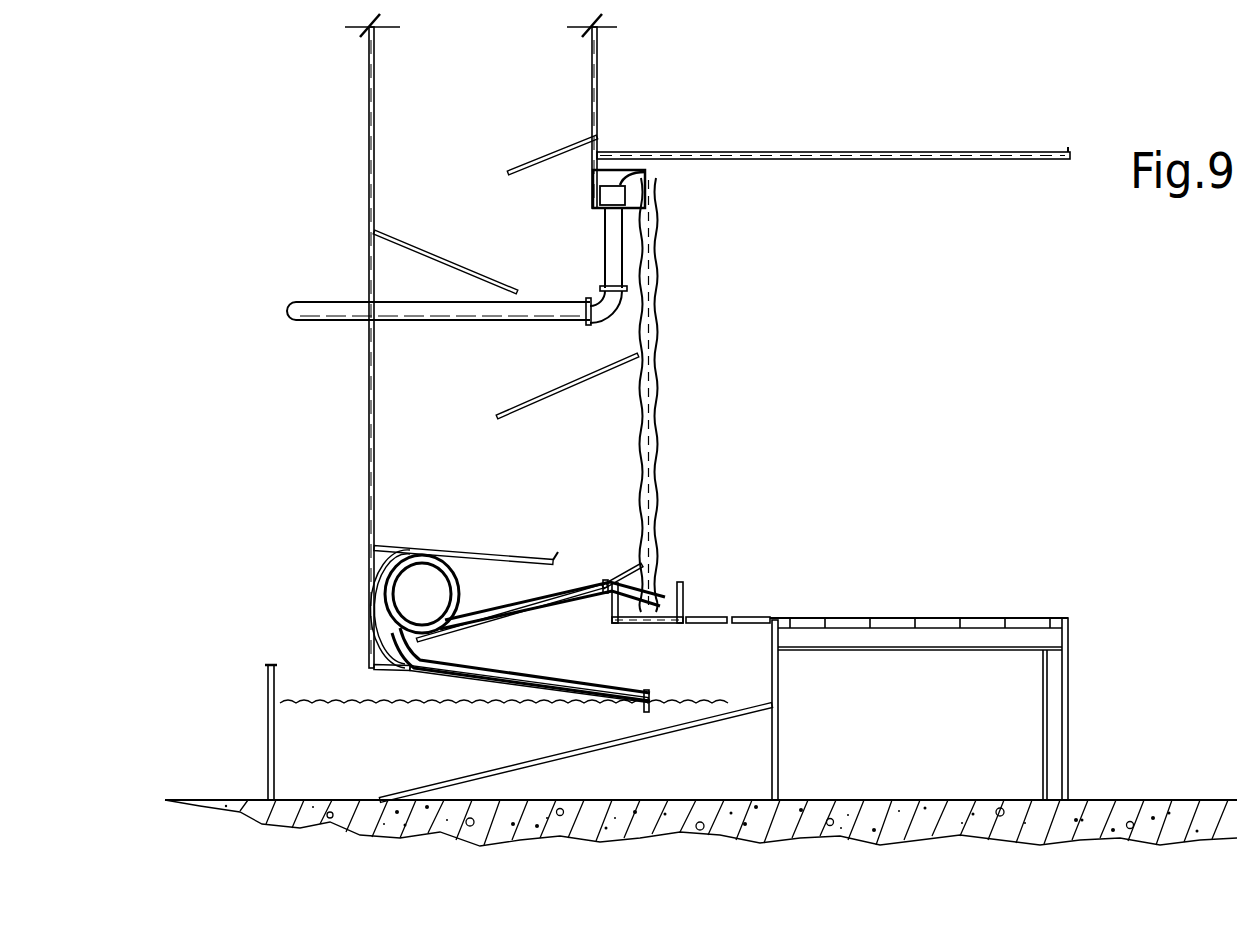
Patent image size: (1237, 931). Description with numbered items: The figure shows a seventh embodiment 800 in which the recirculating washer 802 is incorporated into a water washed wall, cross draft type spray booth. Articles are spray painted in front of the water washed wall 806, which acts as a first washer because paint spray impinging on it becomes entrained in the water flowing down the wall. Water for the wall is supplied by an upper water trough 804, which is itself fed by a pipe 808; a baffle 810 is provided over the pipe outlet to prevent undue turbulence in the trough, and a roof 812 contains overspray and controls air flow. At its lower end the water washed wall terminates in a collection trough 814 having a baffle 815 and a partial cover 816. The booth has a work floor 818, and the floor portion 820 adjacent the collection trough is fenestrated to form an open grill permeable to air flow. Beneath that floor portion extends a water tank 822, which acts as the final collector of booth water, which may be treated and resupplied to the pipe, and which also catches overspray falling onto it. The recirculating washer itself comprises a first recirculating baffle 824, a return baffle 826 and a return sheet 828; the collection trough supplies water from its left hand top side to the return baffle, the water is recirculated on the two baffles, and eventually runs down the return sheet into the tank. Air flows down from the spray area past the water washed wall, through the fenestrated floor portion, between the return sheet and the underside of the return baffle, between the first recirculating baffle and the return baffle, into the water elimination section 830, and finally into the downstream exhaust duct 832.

The seventh embodiment 800 is at (810, 478).
The recirculating washer 802 is at (350, 606).
The upper water trough 804 is at (593, 194).
The water washed wall 806 is at (655, 385).
The pipe 808 is at (312, 305).
The baffle 810 is at (650, 199).
The roof 812 is at (835, 154).
The collection trough 814 is at (685, 598).
The baffle 815 is at (680, 610).
The partial cover 816 is at (615, 585).
The work floor 818 is at (945, 617).
The floor portion 820 is at (770, 632).
The water tank 822 is at (405, 770).
The first recirculating baffle 824 is at (370, 565).
The return baffle 826 is at (533, 607).
The return sheet 828 is at (480, 682).
The water elimination section 830 is at (457, 455).
The exhaust duct 832 is at (369, 68).